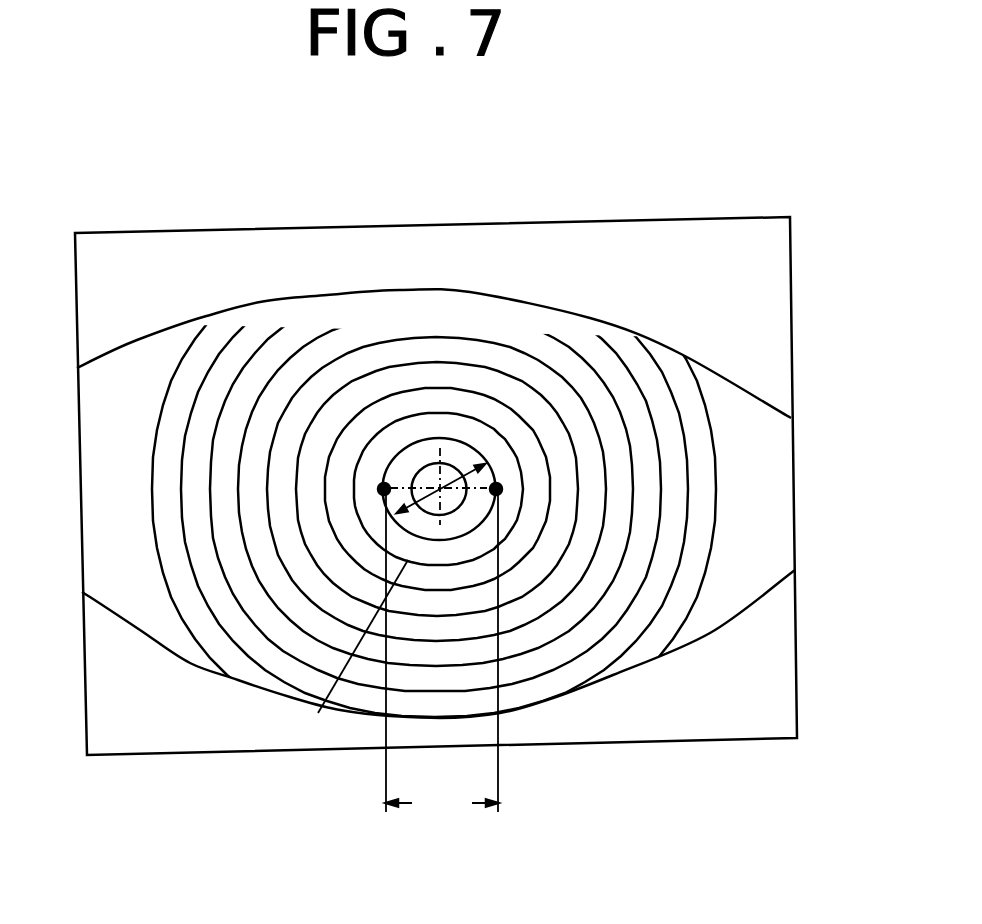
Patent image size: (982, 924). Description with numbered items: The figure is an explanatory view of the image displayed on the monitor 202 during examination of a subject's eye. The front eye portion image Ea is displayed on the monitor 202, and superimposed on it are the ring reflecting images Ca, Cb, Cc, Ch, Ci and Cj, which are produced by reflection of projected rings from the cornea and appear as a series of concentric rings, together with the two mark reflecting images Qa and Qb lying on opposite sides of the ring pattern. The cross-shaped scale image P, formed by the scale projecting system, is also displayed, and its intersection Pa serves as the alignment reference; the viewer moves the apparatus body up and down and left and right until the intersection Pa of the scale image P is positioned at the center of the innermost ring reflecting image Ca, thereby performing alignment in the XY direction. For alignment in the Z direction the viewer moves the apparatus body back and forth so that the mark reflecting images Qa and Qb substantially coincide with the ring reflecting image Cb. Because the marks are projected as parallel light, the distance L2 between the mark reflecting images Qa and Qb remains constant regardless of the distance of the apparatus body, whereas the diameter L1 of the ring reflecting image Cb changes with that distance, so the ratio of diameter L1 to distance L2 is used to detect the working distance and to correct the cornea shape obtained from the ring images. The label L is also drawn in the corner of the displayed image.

The monitor 202 is at (792, 260).
The front eye portion image Ea is at (587, 318).
The ring reflecting image Ca is at (425, 462).
The ring reflecting image Cb is at (447, 438).
The ring reflecting image Cc is at (527, 473).
The ring reflecting image Ch is at (661, 497).
The ring reflecting image Ci is at (679, 572).
The ring reflecting image Cj is at (683, 617).
The scale image P is at (437, 453).
The intersection of the scale image Pa is at (478, 462).
The mark reflecting image Qa is at (383, 490).
The mark reflecting image Qb is at (497, 490).
The lens L is at (116, 727).
The diameter of the ring reflecting image Cb L1 is at (353, 653).
The distance between the mark reflecting images L2 is at (442, 659).